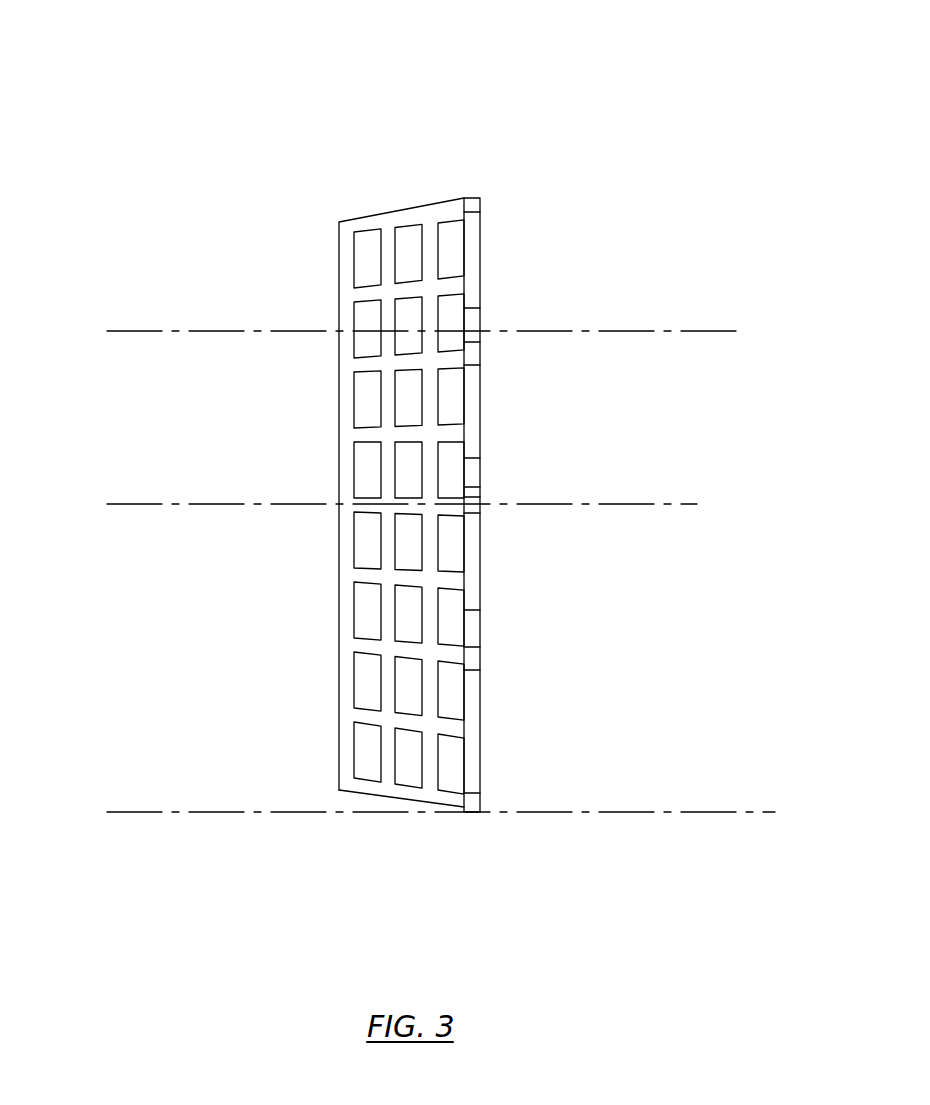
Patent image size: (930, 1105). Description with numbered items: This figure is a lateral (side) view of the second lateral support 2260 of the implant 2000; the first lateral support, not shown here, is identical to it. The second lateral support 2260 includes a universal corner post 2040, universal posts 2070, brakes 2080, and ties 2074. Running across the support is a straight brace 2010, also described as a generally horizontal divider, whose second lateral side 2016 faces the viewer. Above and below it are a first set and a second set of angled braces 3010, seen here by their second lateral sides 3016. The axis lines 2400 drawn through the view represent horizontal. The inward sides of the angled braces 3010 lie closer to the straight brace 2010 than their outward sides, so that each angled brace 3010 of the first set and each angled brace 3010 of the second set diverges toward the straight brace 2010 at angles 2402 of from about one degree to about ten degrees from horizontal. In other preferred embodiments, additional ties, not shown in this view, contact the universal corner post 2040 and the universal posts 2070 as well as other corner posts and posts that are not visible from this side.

The implant 2000 is at (676, 188).
The second lateral support 2260 is at (448, 159).
The straight brace 2010 is at (354, 523).
The second lateral side of straight brace 2016 is at (535, 451).
The universal corner post 2040 is at (322, 763).
The universal posts 2070 is at (457, 243).
The ties 2074 is at (408, 287).
The brakes 2080 is at (491, 189).
The axis lines 2400 is at (440, 570).
The angles 2402 is at (481, 222).
The angled braces 3010 is at (361, 226).
The second lateral sides of angled braces 3016 is at (397, 193).